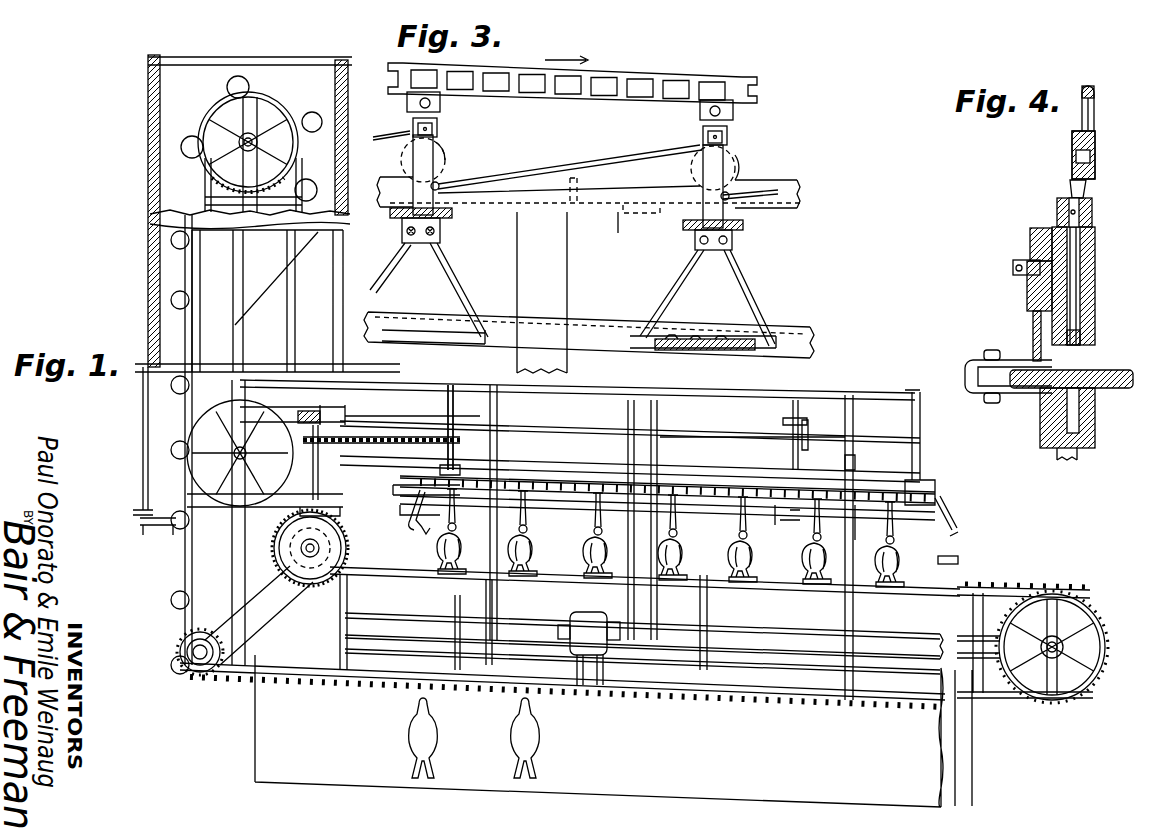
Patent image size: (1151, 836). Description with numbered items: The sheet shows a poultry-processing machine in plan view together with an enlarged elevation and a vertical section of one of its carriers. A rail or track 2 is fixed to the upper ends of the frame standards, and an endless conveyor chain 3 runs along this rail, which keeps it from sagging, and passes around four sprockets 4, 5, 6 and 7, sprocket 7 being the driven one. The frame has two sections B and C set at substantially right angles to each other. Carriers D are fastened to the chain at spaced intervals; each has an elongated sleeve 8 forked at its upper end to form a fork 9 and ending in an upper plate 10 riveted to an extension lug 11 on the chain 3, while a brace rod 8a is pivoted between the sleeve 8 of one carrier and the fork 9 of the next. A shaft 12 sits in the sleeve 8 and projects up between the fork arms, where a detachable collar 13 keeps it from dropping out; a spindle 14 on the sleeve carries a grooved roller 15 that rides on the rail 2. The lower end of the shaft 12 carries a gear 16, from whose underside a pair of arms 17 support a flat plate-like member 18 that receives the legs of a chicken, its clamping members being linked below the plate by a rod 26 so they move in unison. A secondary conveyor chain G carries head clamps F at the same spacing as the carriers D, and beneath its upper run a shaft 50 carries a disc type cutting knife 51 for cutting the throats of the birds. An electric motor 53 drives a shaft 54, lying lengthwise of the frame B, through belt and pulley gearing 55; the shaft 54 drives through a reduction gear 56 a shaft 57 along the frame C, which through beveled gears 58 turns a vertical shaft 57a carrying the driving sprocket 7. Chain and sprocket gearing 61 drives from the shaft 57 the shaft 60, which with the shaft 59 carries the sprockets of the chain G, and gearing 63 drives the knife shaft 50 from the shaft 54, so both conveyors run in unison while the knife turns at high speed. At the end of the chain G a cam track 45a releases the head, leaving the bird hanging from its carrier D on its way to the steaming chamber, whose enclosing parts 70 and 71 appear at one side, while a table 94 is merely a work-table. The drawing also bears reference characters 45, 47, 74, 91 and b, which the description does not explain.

In FIG. 3, the rail or track 2 is at (628, 193).
In FIG. 4, the rail or track 2 is at (1033, 326).
In FIG. 1, the rail or track 2 is at (355, 577).
In FIG. 3, the conveyor chain 3 is at (613, 76).
In FIG. 4, the conveyor chain 3 is at (1094, 100).
In FIG. 1, the conveyor chain 3 is at (386, 575).
In FIG. 3, the sprocket 4 is at (713, 70).
In FIG. 1, the sprocket 4 is at (1083, 612).
In FIG. 3, the sprocket 5 is at (635, 306).
In FIG. 1, the sprocket 5 is at (275, 106).
In FIG. 1, the sprocket 6 is at (180, 655).
In FIG. 1, the driving sprocket 7 is at (348, 548).
In FIG. 3, the elongated sleeve 8 is at (446, 160).
In FIG. 4, the elongated sleeve 8 is at (1095, 256).
In FIG. 3, the brace rod 8a is at (395, 140).
In FIG. 3, the fork 9 is at (413, 124).
In FIG. 4, the fork 9 is at (1070, 192).
In FIG. 3, the upper plate 10 is at (432, 104).
In FIG. 4, the upper plate 10 is at (1072, 147).
In FIG. 3, the extension lug 11 is at (407, 101).
In FIG. 4, the extension lug 11 is at (1095, 146).
In FIG. 4, the shaft 12 is at (1078, 303).
In FIG. 3, the collar 13 is at (432, 130).
In FIG. 4, the collar 13 is at (1057, 210).
In FIG. 4, the spindle 14 is at (1013, 268).
In FIG. 3, the grooved roller 15 is at (437, 152).
In FIG. 4, the grooved roller 15 is at (1030, 241).
In FIG. 3, the gear 16 is at (401, 208).
In FIG. 4, the gear 16 is at (1115, 372).
In FIG. 3, the arms 17 is at (465, 293).
In FIG. 4, the arms 17 is at (1078, 457).
In FIG. 3, the flat plate-like member 18 is at (462, 345).
In FIG. 1, the flat plate-like member 18 is at (306, 180).
In FIG. 3, the rod 26 is at (668, 351).
In FIG. 1, the rail 45 is at (770, 488).
In FIG. 1, the cam track 45a is at (395, 506).
In FIG. 1, the bar 47 is at (855, 525).
In FIG. 1, the shaft 50 is at (793, 443).
In FIG. 1, the disc type cutting knife 51 is at (775, 520).
In FIG. 1, the electric motor 53 is at (575, 618).
In FIG. 1, the shaft 54 is at (573, 427).
In FIG. 1, the belt and pulley gearing means 55 is at (660, 470).
In FIG. 1, the reduction gear drive 56 is at (322, 413).
In FIG. 1, the shaft 57 is at (320, 500).
In FIG. 1, the vertical shaft 57a is at (322, 606).
In FIG. 1, the beveled gears 58 is at (335, 515).
In FIG. 1, the shaft 59 is at (455, 415).
In FIG. 1, the shaft 60 is at (920, 430).
In FIG. 1, the chain and sprocket gearing 61 is at (396, 432).
In FIG. 1, the gearing 63 is at (808, 420).
In FIG. 1, the enclosing part of steaming chamber 70 is at (143, 518).
In FIG. 1, the enclosing part of steaming chamber 71 is at (262, 62).
In FIG. 1, the sprocket wheel 74 is at (226, 408).
In FIG. 1, the carcass 91 is at (553, 533).
In FIG. 1, the table 94 is at (599, 731).
In FIG. 1, the frame section B is at (887, 633).
In FIG. 1, the frame section C is at (238, 270).
In FIG. 3, the carriers D is at (464, 266).
In FIG. 4, the carriers D is at (1090, 452).
In FIG. 1, the carriers D is at (563, 704).
In FIG. 1, the head clamp F is at (410, 507).
In FIG. 1, the secondary conveyor chain G is at (567, 480).
In FIG. 1, the direction b is at (928, 564).